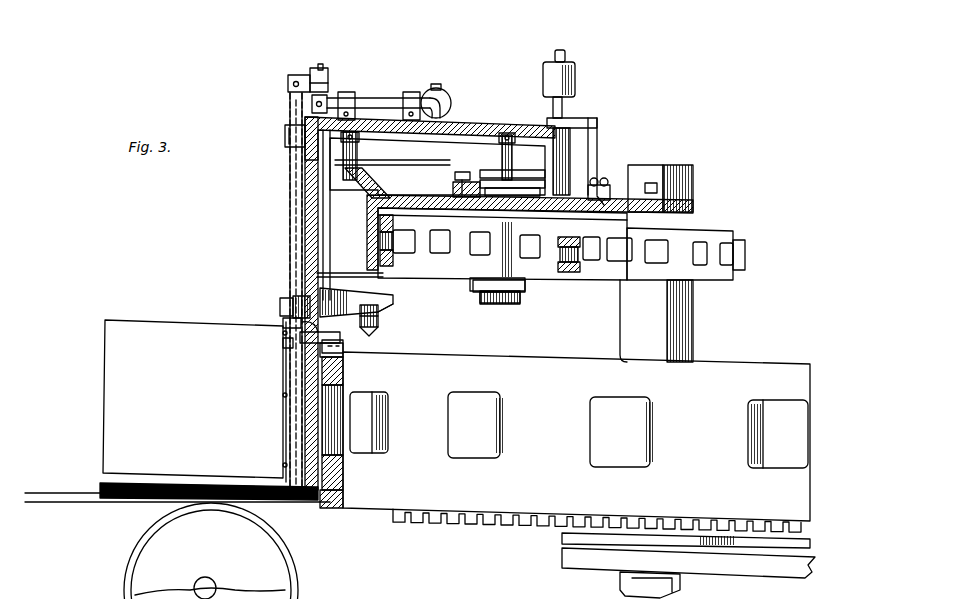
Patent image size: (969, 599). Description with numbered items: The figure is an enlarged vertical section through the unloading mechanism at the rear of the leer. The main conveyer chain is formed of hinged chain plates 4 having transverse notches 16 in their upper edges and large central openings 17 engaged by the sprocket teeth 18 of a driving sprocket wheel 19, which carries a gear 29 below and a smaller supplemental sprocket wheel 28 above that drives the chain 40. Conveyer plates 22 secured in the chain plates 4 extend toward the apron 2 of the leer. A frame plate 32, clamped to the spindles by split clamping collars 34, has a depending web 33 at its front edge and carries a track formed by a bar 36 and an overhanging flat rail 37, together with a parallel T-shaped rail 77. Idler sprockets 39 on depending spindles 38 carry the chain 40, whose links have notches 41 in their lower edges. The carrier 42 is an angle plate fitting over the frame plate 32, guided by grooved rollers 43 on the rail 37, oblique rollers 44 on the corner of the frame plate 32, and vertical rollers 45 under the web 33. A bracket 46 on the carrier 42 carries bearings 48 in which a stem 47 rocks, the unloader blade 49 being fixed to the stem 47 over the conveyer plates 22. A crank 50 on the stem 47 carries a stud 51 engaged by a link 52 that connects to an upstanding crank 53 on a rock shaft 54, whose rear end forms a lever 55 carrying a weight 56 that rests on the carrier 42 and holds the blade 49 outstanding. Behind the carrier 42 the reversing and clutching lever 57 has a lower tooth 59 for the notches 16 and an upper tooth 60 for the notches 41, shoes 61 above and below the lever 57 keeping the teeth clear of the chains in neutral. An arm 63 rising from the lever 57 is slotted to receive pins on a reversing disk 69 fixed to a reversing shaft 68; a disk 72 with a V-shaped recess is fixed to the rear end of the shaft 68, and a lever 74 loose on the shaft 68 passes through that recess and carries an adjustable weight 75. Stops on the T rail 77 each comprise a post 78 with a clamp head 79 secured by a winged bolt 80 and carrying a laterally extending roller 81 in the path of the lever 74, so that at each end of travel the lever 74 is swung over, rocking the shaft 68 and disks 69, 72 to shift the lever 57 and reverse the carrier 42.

The apron 2 is at (70, 502).
The chain plates 4 is at (344, 372).
The transverse notches 16 is at (344, 346).
The large openings 17 is at (344, 457).
The sprocket teeth 18 is at (476, 443).
The driving sprocket wheels 19 is at (502, 363).
The conveyer plates 22 is at (178, 484).
The supplemental sprocket wheel 28 is at (735, 232).
The gear 29 is at (475, 524).
The frame plate 32 is at (618, 212).
The depending web or rail 33 is at (330, 222).
The split clamping collars 34 is at (693, 190).
The bar 36 is at (452, 200).
The flat rail 37 is at (458, 172).
The spindles 38 is at (520, 296).
The idler sprockets 39 is at (456, 262).
The chain 40 is at (384, 214).
The transverse notches 41 is at (385, 316).
The carrier 42 is at (478, 132).
The grooved rollers 43 is at (492, 171).
The rollers 44 is at (352, 198).
The rollers 45 is at (379, 326).
The bracket 46 is at (284, 434).
The stem 47 is at (290, 281).
The keepers or bearings 48 is at (288, 126).
The unloader blade 49 is at (193, 399).
The crank 50 is at (326, 97).
The stud 51 is at (319, 68).
The link 52 is at (300, 75).
The crank 53 is at (325, 82).
The rock shaft 54 is at (388, 98).
The crank arm or lever 55 is at (441, 108).
The weight 56 is at (440, 89).
The reversing and clutching lever 57 is at (284, 342).
The tooth 59 is at (340, 335).
The tooth 60 is at (394, 303).
The shoes 61 is at (341, 273).
The arm 63 is at (305, 241).
The reversing shaft 68 is at (404, 164).
The reversing disk 69 is at (330, 160).
The disk 72 is at (583, 128).
The lever 74 is at (547, 121).
The adjustable weight 75 is at (573, 76).
The rail 77 is at (600, 215).
The post 78 is at (592, 172).
The clamp head 79 is at (590, 183).
The winged bolt or screw 80 is at (600, 200).
The rollers 81 is at (574, 118).